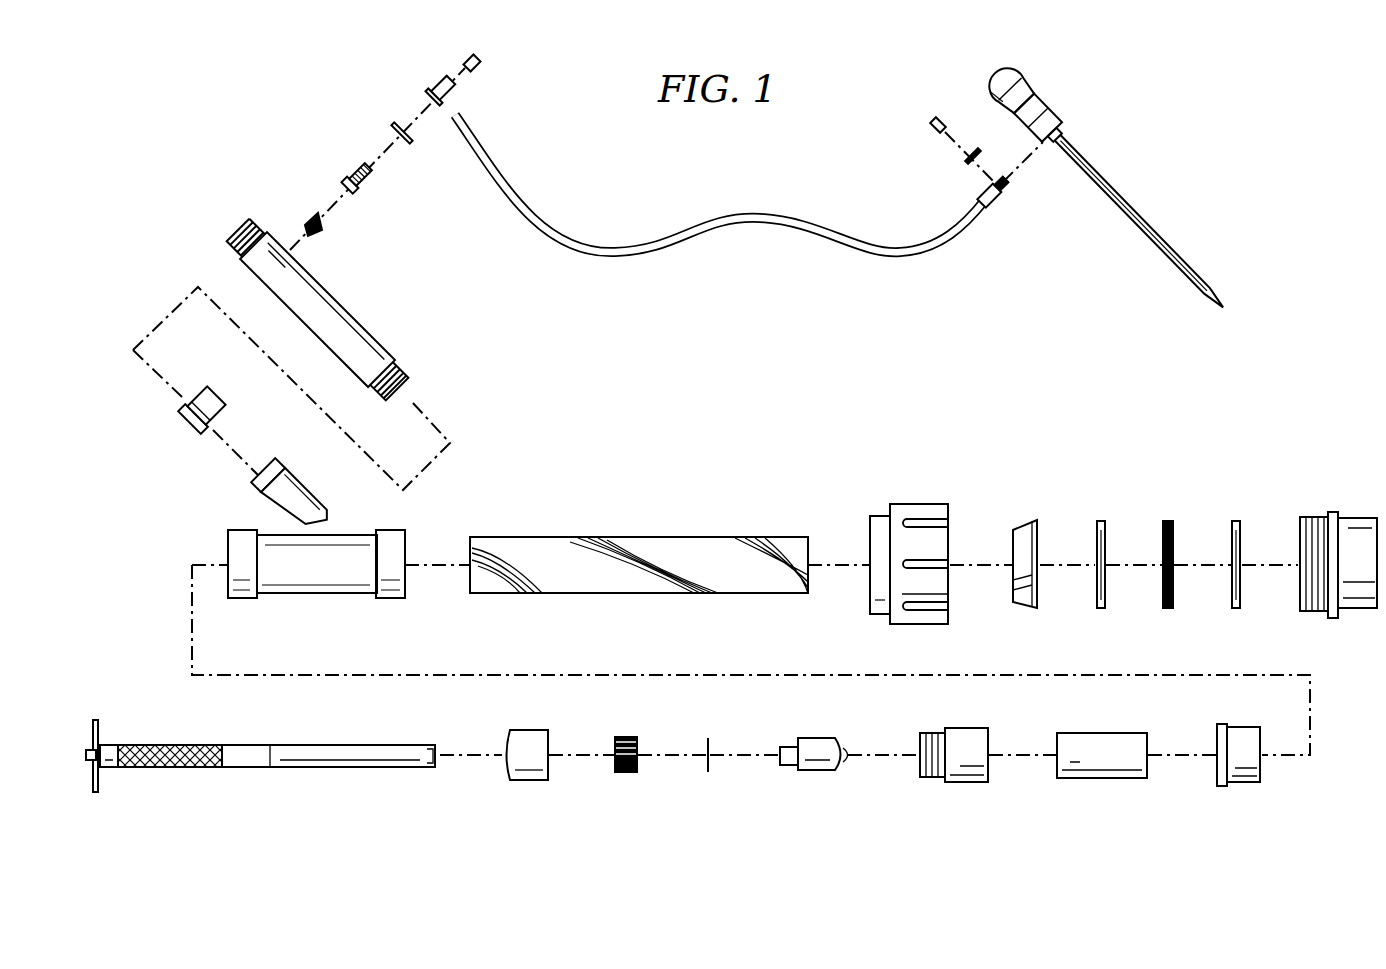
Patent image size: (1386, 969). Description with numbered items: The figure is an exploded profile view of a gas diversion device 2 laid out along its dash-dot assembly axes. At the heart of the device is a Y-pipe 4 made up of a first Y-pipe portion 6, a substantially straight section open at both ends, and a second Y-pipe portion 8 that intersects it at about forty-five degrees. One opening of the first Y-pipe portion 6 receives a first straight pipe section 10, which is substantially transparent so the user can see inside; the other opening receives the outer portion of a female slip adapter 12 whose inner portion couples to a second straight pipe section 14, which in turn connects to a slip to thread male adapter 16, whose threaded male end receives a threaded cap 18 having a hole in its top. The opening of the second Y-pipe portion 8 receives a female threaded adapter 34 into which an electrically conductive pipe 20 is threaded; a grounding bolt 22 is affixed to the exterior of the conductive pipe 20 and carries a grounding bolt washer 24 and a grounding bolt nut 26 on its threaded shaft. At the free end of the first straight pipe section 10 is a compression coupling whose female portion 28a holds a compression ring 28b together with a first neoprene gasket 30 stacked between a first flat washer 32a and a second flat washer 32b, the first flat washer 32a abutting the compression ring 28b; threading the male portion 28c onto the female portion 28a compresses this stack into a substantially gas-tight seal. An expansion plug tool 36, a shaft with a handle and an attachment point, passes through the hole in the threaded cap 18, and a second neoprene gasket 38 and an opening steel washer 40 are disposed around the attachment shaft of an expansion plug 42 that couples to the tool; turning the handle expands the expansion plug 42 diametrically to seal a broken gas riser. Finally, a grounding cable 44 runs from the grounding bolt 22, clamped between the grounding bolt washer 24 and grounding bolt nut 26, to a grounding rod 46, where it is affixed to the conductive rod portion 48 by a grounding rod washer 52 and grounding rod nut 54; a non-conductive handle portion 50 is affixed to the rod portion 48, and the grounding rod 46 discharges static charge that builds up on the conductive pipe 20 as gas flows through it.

The gas diversion device 2 is at (212, 104).
The Y-pipe 4 is at (316, 557).
The first Y-pipe portion 6 is at (320, 582).
The second Y-pipe portion 8 is at (312, 512).
The first straight pipe section 10 is at (624, 536).
The female slip adapter 12 is at (1244, 784).
The second straight pipe section 14 is at (1104, 780).
The slip to thread male adapter 16 is at (968, 784).
The threaded cap 18 is at (528, 781).
The electrically conductive pipe 20 is at (322, 305).
The grounding bolt 22 is at (350, 176).
The grounding bolt washer 24 is at (396, 128).
The grounding bolt nut 26 is at (480, 68).
The female portion 28a is at (912, 503).
The compression ring 28b is at (1027, 522).
The male portion 28c is at (1350, 612).
The first neoprene gasket 30 is at (1168, 519).
The first flat washer 32a is at (1102, 519).
The second flat washer 32b is at (1237, 519).
The female threaded adapter 34 is at (185, 434).
The expansion plug tool 36 is at (252, 768).
The second neoprene gasket 38 is at (626, 773).
The opening steel washer 40 is at (708, 775).
The expansion plug 42 is at (826, 772).
The grounding cable 44 is at (770, 214).
The grounding rod 46 is at (1128, 171).
The rod portion 48 is at (1161, 197).
The handle portion 50 is at (1009, 88).
The grounding rod washer 52 is at (962, 160).
The grounding rod nut 54 is at (930, 126).